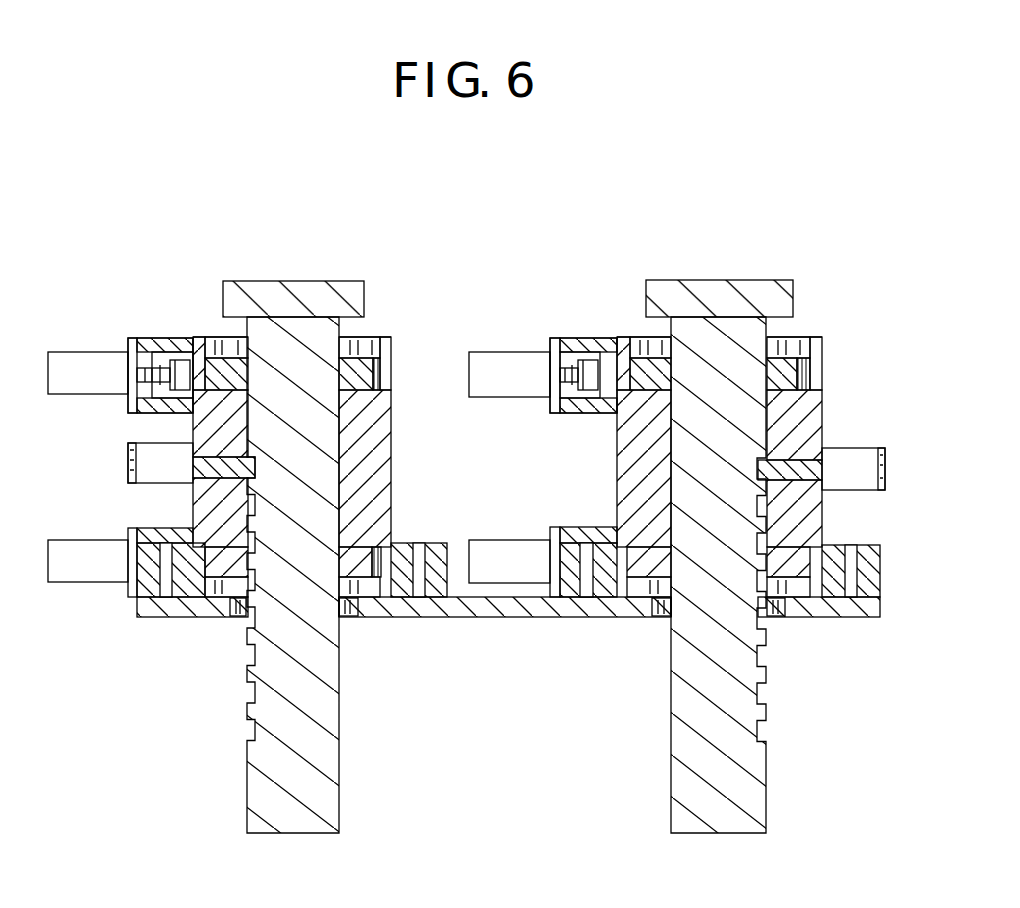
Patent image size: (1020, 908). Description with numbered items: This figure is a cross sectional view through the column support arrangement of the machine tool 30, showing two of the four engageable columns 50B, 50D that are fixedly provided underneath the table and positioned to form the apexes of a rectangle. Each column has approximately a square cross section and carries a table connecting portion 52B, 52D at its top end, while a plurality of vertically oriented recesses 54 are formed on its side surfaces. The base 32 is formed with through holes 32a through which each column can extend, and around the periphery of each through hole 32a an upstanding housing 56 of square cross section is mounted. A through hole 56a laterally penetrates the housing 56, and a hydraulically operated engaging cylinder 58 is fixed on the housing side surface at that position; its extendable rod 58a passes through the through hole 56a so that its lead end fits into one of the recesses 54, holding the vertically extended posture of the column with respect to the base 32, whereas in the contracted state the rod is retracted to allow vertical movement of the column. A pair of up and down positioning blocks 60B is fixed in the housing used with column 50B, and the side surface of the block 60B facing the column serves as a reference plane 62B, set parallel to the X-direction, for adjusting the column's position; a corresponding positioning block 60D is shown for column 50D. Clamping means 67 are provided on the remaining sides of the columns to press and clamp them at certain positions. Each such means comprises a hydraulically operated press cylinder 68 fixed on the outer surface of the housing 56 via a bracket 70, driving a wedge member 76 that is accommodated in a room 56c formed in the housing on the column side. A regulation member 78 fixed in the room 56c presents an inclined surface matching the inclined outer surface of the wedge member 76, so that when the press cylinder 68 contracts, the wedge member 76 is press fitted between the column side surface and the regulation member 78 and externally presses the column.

The machine tool 30 is at (810, 230).
The base 32 is at (517, 612).
The through hole 32a is at (350, 617).
The engageable column 50B is at (320, 765).
The engageable column 50D is at (687, 795).
The table connecting portion 52B is at (318, 292).
The table connecting portion 52D is at (752, 292).
The recesses 54 is at (248, 693).
The housing 56 is at (375, 432).
The through hole 56a is at (210, 458).
The room 56c is at (365, 345).
The engaging cylinder 58 is at (145, 463).
The extendable rod 58a is at (252, 470).
The up and down positioning block 60B is at (220, 367).
The clamp member 60D is at (635, 477).
The reference plane 62B is at (252, 368).
The clamping means 67 is at (120, 322).
The press cylinder 68 is at (88, 370).
The bracket 70 is at (152, 402).
The wedge member 76 is at (350, 342).
The regulation member 78 is at (360, 372).